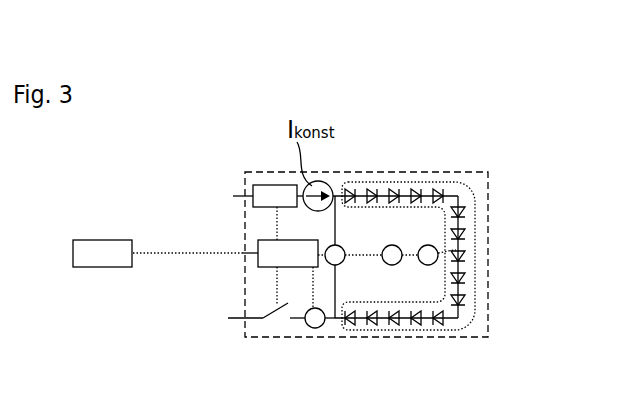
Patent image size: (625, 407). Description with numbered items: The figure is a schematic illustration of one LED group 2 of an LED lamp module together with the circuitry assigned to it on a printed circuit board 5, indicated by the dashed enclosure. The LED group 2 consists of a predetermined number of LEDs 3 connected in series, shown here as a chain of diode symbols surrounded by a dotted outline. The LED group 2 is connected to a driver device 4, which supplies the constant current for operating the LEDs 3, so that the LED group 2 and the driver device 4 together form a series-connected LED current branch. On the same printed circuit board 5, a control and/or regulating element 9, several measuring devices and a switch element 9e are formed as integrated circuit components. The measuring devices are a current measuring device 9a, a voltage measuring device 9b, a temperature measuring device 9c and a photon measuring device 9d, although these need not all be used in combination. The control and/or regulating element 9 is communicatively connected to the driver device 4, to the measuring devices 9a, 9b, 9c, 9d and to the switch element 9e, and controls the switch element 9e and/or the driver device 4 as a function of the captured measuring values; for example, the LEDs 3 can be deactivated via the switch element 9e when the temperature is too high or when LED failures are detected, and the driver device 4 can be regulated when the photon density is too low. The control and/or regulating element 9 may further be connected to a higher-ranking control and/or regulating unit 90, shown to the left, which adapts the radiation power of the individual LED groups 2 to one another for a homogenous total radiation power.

The LED group 2 is at (478, 197).
The LED 3 is at (365, 183).
The driver device 4 is at (262, 190).
The printed circuit board 5 is at (480, 326).
The control and/or regulating element 9 is at (266, 246).
The current measuring device 9a is at (318, 327).
The voltage measuring device 9b is at (343, 260).
The temperature measuring device 9c is at (457, 252).
The photon measuring device 9d is at (392, 257).
The switch element 9e is at (264, 318).
The higher-ranking control and/or regulating unit 90 is at (105, 258).